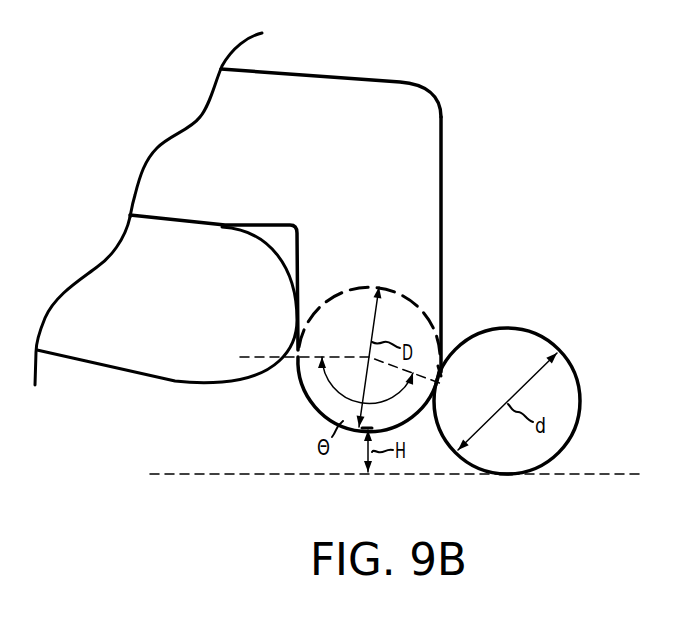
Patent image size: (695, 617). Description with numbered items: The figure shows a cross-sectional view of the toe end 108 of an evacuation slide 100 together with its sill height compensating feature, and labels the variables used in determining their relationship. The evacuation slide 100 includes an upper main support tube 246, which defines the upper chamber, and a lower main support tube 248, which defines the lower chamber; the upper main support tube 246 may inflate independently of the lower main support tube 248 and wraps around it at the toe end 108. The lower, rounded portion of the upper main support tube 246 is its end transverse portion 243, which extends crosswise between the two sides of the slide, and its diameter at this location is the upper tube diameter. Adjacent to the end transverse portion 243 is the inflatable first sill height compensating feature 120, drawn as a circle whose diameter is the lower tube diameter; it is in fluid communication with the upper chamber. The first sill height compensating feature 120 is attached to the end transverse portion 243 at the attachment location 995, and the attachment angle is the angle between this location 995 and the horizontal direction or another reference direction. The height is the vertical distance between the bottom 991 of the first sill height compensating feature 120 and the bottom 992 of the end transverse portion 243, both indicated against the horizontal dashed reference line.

The evacuation slide 100 is at (550, 85).
The toe end 108 is at (455, 216).
The first sill height compensating feature 120 is at (563, 357).
The end transverse portion 243 is at (300, 405).
The upper main support tube 246 is at (435, 92).
The lower main support tube 248 is at (170, 380).
The bottom of first sill height compensating feature 991 is at (505, 476).
The bottom of end transverse portion 992 is at (365, 430).
The attachment location 995 is at (438, 376).